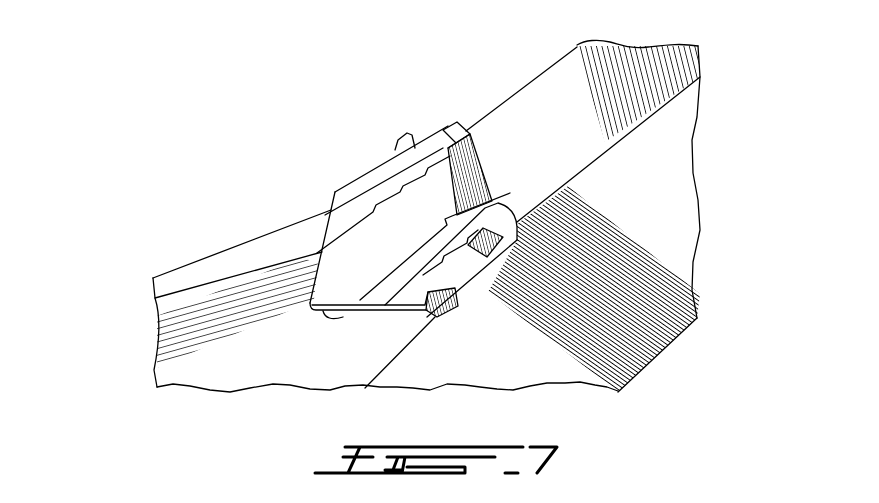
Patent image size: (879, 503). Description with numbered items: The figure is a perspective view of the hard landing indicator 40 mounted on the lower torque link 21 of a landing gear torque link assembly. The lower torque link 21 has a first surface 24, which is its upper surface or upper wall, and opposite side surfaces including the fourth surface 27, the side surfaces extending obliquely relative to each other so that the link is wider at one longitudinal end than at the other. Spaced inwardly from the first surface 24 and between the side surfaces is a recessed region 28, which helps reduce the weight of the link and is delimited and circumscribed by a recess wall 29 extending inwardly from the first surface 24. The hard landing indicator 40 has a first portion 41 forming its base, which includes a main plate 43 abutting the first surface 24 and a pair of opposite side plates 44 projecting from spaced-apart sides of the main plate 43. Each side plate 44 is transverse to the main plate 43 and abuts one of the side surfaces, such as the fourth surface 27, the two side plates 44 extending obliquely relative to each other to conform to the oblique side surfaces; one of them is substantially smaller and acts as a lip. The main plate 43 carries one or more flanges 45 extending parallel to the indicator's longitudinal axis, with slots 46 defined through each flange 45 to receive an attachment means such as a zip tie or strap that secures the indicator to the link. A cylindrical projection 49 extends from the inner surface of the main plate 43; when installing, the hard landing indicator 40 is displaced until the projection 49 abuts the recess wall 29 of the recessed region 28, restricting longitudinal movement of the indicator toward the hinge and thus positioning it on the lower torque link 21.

The lower torque link 21 is at (624, 88).
The first surface 24 is at (542, 138).
The fourth surface 27 is at (663, 236).
The recessed region 28 is at (226, 354).
The recess wall 29 is at (237, 282).
The hard landing indicator 40 is at (297, 130).
The first portion 41 is at (452, 194).
The main plate 43 is at (445, 158).
The side plate 44 is at (497, 260).
The flange 45 is at (373, 187).
The slot 46 is at (432, 267).
The projection 49 is at (330, 325).